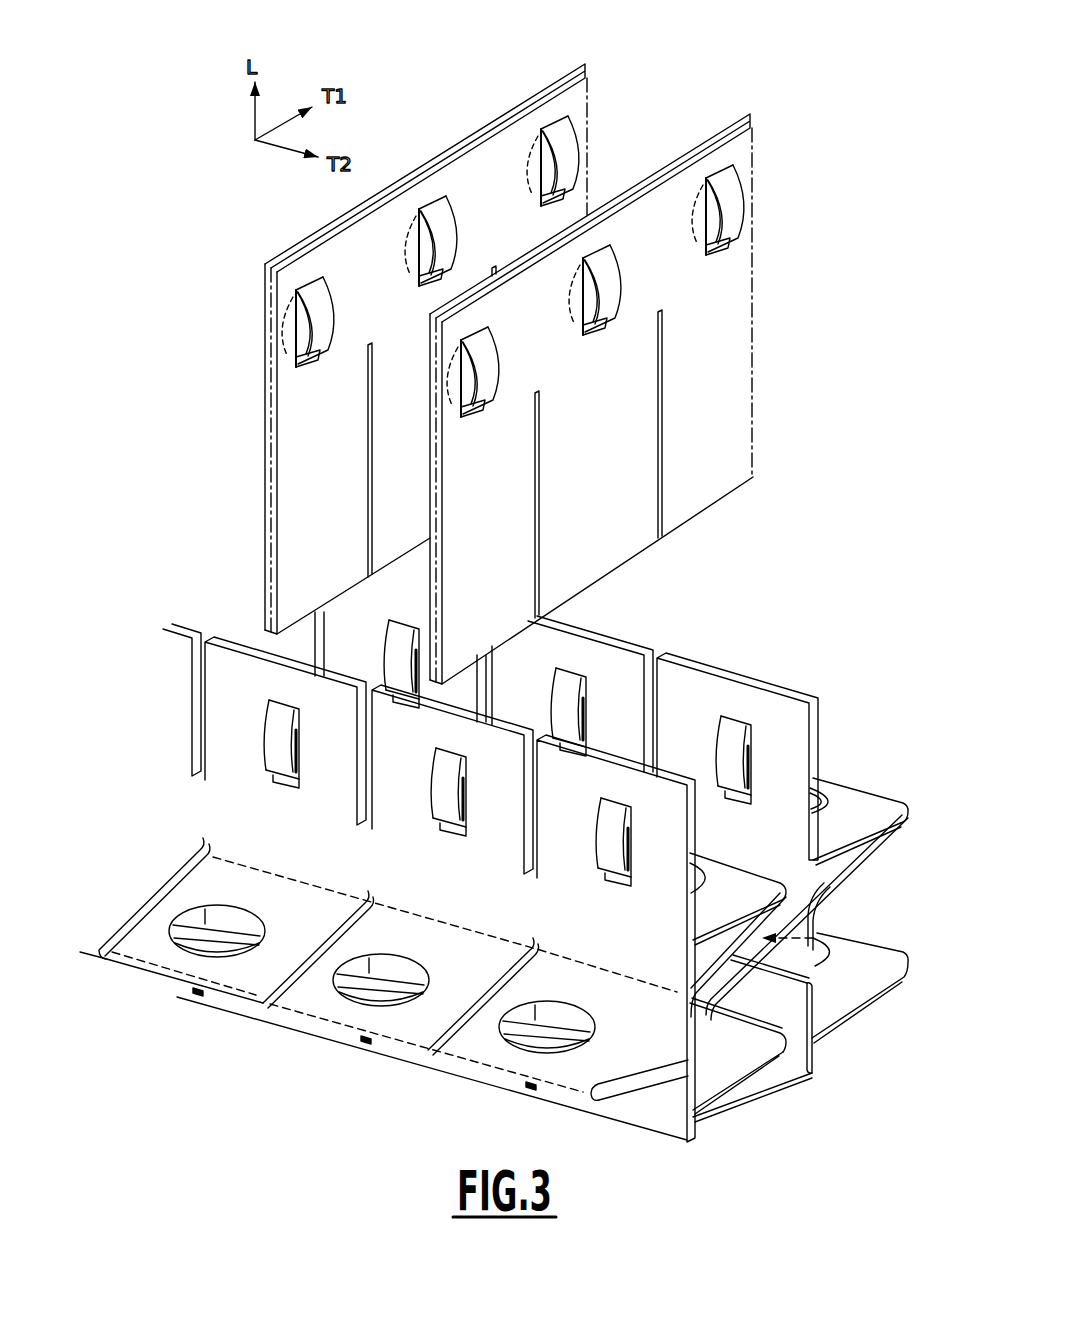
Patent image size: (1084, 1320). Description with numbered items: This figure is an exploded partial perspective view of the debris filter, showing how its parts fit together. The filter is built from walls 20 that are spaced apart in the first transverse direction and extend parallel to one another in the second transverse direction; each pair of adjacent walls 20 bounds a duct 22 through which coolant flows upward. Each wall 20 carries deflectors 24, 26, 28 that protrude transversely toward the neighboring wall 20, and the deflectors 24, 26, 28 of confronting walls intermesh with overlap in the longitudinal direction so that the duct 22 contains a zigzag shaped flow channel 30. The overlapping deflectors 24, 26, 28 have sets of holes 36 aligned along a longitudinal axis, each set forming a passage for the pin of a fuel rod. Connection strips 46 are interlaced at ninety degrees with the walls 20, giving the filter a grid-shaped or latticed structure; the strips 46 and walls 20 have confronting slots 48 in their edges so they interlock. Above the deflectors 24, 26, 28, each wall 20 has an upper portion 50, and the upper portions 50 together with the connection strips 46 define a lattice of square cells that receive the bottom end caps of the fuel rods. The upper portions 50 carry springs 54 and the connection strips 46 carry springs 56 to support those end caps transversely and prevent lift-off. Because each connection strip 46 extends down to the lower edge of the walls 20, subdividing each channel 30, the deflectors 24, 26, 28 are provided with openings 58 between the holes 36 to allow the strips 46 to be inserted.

The wall 20 is at (772, 673).
The duct 22 is at (753, 844).
The deflector 24 is at (903, 810).
The deflector 26 is at (900, 952).
The deflector 28 is at (767, 1028).
The zigzag shaped flow channel 30 is at (817, 937).
The hole 36 is at (527, 1005).
The connection strip 46 is at (590, 61).
The slot 48 is at (661, 540).
The upper portion 50 is at (778, 716).
The spring 54 is at (450, 760).
The spring 56 is at (567, 152).
The opening 58 is at (428, 1047).